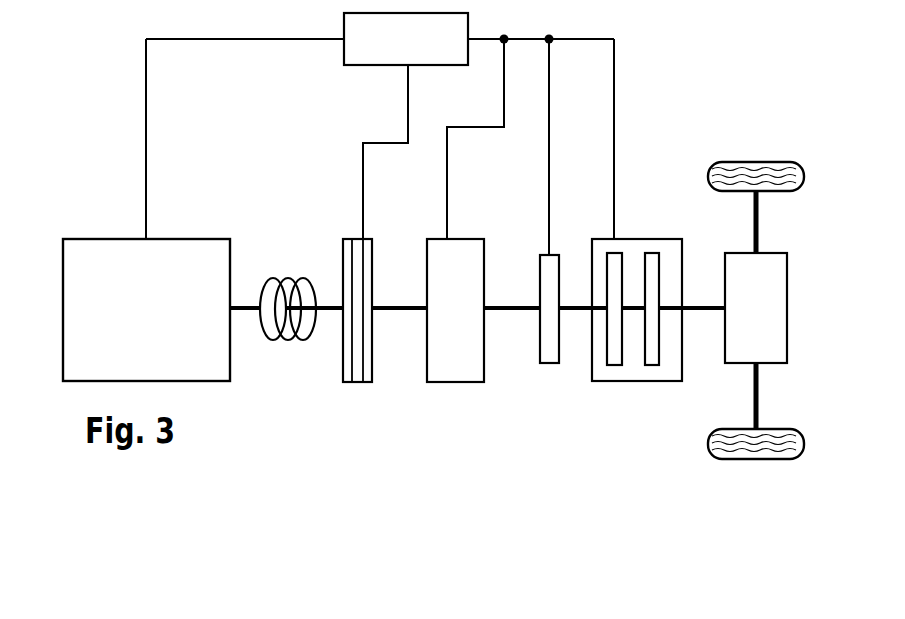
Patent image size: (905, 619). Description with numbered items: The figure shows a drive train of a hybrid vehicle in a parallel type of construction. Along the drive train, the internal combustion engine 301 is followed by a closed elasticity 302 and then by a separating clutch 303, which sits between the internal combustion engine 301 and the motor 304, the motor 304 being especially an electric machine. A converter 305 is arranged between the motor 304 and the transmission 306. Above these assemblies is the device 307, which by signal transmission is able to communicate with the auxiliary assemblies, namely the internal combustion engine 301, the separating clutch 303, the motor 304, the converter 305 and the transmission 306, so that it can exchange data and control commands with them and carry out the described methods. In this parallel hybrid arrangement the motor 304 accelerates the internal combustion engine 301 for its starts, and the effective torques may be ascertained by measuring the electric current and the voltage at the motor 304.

The internal combustion engine 301 is at (100, 239).
The closed elasticity 302 is at (291, 278).
The separating clutch 303 is at (349, 239).
The motor 304 is at (468, 239).
The converter 305 is at (547, 363).
The transmission 306 is at (642, 239).
The device 307 is at (344, 51).